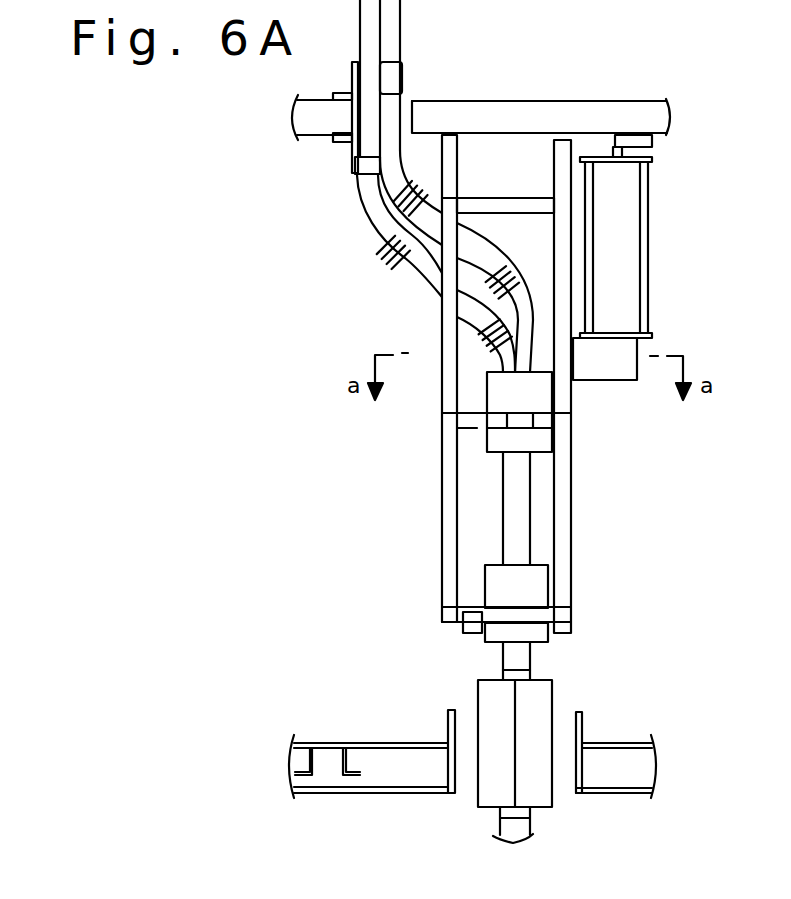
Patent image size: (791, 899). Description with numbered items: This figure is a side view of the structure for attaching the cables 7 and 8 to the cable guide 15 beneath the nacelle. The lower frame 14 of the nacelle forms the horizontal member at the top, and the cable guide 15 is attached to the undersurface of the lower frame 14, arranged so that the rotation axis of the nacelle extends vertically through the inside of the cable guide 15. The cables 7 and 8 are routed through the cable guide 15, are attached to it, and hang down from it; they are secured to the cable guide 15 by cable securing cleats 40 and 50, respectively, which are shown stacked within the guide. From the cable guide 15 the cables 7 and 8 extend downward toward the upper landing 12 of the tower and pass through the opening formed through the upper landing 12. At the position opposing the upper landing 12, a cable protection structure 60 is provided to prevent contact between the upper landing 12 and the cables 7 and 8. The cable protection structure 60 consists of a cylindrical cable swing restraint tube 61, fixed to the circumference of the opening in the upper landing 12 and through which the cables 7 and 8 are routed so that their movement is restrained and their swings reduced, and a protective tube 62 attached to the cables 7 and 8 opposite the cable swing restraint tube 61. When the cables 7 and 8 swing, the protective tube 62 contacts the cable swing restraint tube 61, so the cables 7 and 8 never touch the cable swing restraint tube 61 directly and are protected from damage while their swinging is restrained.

The lower frame 14 is at (557, 103).
The cable 8 is at (393, 180).
The cable 7 is at (379, 240).
The cable guide 15 is at (443, 510).
The cable securing cleat 40 is at (547, 398).
The cable securing cleat 50 is at (573, 507).
The cable protection structure 60 is at (590, 740).
The protective tube 62 is at (548, 693).
The cable swing restraint tube 61 is at (612, 740).
The upper landing 12 is at (610, 793).